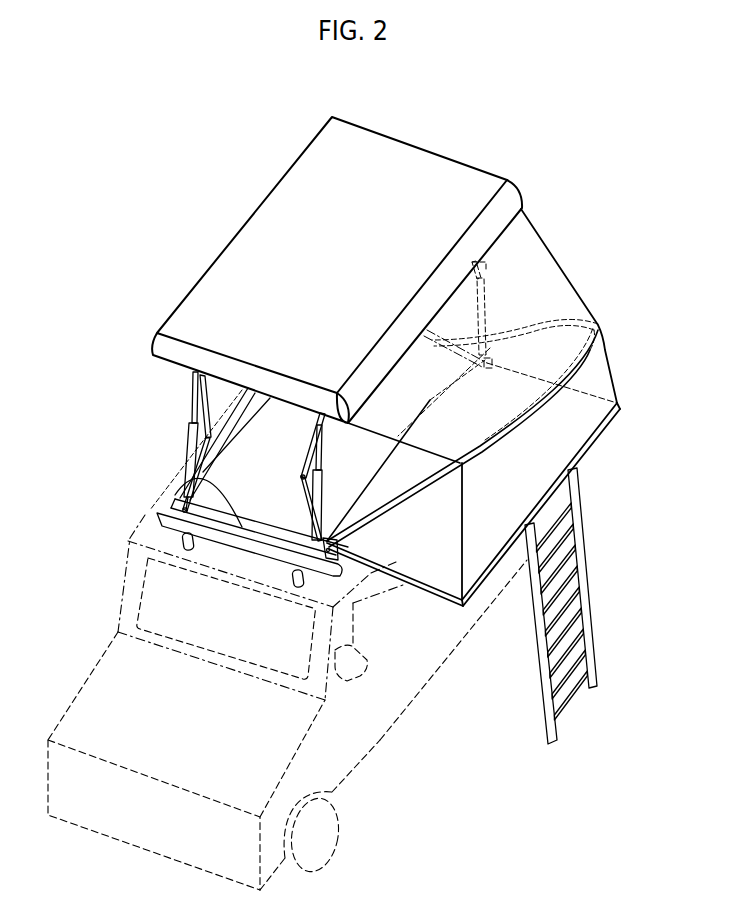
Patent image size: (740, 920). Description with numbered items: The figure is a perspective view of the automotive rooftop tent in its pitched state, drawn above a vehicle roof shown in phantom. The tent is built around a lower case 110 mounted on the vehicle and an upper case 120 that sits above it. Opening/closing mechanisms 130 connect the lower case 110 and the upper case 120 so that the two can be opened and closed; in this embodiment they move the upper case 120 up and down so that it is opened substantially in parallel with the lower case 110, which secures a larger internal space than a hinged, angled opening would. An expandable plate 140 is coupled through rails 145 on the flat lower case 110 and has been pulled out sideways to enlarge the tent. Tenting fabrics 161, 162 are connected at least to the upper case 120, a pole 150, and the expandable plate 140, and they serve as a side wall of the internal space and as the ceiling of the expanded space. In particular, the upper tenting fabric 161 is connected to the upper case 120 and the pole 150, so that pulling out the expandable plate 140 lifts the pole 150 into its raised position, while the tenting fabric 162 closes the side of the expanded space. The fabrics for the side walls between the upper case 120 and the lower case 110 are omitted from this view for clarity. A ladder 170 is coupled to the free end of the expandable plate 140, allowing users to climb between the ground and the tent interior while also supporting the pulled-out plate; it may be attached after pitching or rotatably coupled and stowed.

The lower case 110 is at (170, 512).
The upper case 120 is at (265, 237).
The opening/closing mechanisms 130 is at (176, 426).
The expandable plate 140 is at (443, 567).
The rails 145 is at (197, 486).
The pole 150 is at (600, 330).
The upper tenting fabric 161 is at (555, 285).
The tenting fabric 162 is at (595, 377).
The ladder 170 is at (580, 527).